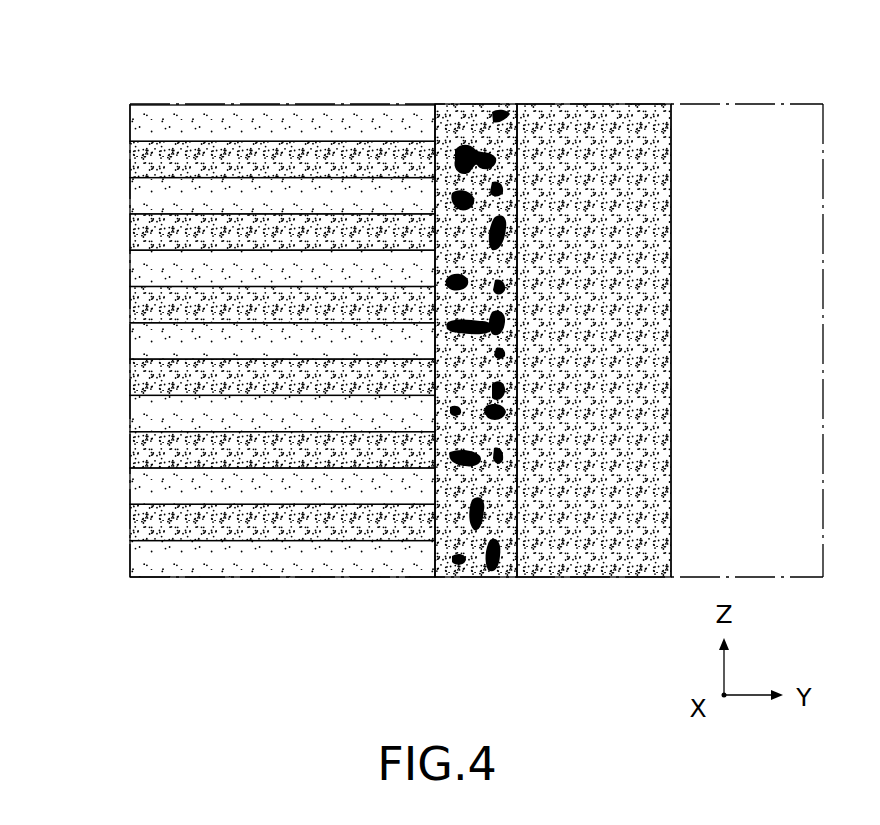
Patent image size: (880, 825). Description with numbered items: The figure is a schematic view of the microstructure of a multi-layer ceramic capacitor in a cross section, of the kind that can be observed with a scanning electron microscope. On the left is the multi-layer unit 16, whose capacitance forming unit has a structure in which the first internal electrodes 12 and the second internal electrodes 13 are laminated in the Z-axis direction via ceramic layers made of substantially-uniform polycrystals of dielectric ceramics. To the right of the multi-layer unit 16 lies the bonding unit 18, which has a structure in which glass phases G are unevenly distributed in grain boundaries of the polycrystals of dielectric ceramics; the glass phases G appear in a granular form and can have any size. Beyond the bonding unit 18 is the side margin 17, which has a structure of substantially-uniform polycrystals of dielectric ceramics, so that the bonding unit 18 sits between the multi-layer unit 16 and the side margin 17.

The first internal electrodes 12 is at (160, 487).
The second internal electrodes 13 is at (160, 560).
The multi-layer unit 16 is at (238, 306).
The side margins 17 is at (517, 96).
The bonding units 18 is at (476, 344).
The glass phases G is at (484, 566).